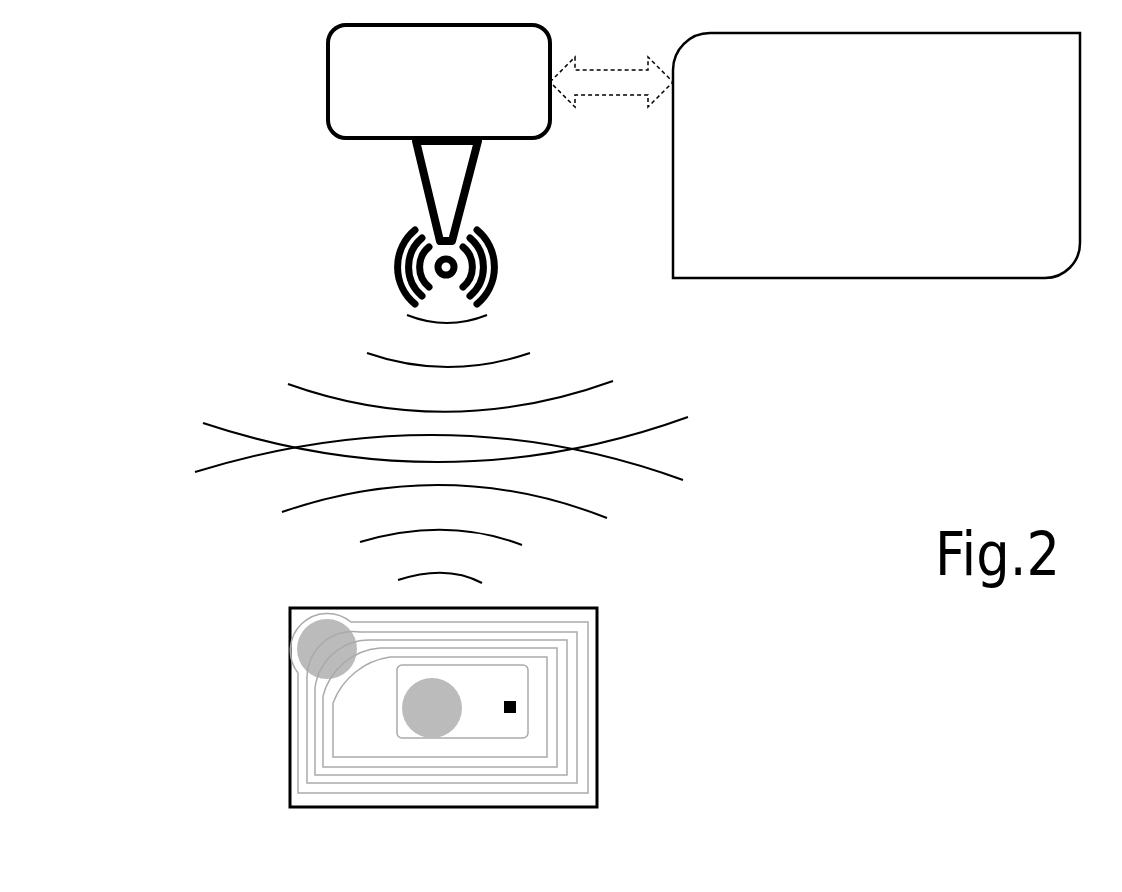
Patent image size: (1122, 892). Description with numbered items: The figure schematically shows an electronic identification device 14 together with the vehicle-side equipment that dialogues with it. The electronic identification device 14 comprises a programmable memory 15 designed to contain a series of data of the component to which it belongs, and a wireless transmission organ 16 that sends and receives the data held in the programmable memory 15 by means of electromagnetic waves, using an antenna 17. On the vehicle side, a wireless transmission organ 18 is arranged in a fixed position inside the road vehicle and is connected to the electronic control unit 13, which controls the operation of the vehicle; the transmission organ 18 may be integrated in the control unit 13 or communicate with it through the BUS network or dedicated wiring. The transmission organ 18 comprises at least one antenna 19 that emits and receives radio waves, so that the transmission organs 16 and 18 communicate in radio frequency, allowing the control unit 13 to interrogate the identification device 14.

The electronic control unit 13 is at (910, 255).
The electronic identification device 14 is at (210, 698).
The programmable memory 15 is at (510, 713).
The transmission organ 16 is at (673, 705).
The antenna 17 is at (580, 772).
The wireless transmission organ 18 is at (378, 63).
The antenna 19 is at (447, 190).